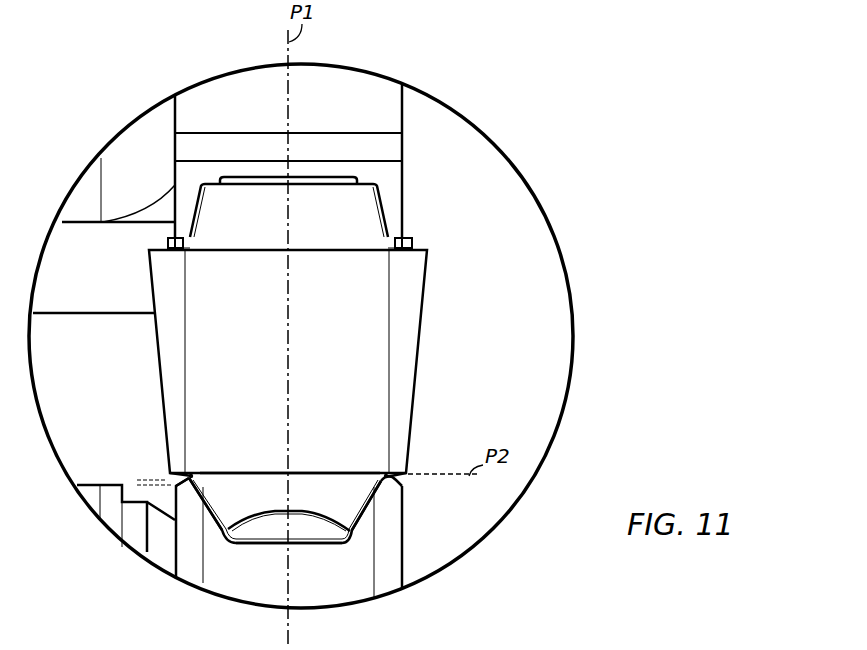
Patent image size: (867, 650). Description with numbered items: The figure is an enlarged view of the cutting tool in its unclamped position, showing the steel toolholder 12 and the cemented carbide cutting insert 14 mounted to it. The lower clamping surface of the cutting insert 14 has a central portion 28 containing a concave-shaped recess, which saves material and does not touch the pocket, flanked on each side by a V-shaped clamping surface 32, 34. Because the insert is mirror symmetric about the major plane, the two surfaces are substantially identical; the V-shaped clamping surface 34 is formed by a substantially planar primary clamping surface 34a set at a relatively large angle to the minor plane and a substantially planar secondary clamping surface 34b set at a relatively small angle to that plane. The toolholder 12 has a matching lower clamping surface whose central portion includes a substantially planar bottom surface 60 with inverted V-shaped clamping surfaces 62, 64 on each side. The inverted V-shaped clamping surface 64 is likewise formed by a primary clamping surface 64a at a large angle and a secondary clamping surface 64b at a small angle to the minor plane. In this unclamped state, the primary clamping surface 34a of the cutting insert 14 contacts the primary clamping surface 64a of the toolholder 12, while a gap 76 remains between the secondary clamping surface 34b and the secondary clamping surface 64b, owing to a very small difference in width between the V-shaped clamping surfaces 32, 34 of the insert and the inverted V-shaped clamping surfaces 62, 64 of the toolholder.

The toolholder 12 is at (411, 561).
The cutting insert 14 is at (441, 346).
The central portion 28 is at (296, 521).
The V-shaped clamping surface 32 is at (187, 492).
The V-shaped clamping surface 34 is at (323, 493).
The primary clamping surface 34a is at (378, 476).
The secondary clamping surface 34b is at (399, 486).
The bottom surface 60 is at (265, 541).
The inverted V-shaped clamping surface 62 is at (191, 474).
The inverted V-shaped clamping surface 64 is at (377, 467).
The primary clamping surface 64a is at (358, 525).
The secondary clamping surface 64b is at (388, 476).
The gap 76 is at (155, 503).